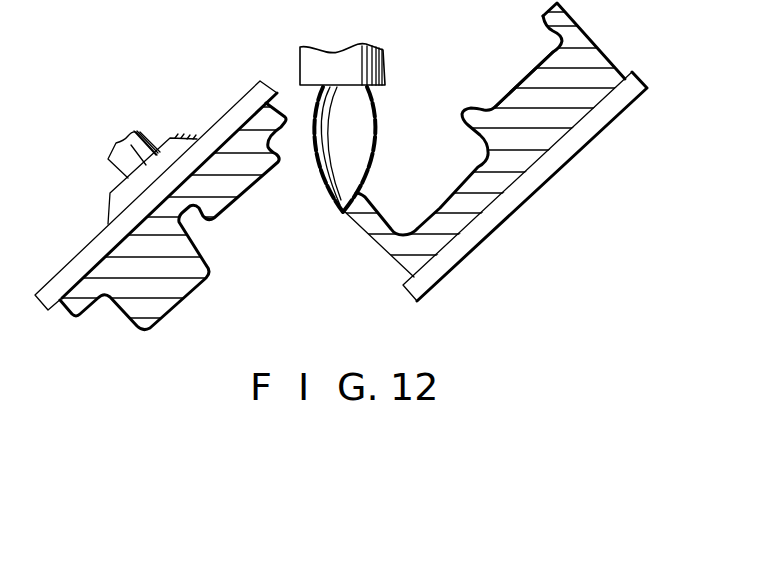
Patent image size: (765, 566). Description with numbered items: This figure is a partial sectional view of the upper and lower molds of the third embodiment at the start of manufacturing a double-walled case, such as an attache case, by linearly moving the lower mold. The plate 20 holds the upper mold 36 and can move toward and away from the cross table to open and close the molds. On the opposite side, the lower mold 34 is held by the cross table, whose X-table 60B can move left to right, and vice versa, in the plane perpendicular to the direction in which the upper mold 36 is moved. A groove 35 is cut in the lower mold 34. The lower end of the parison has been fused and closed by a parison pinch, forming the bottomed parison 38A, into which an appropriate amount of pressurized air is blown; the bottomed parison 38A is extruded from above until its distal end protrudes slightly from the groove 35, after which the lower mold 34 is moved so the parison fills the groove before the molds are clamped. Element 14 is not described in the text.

The plate 20 is at (259, 96).
The upper mold 36 is at (238, 183).
The mounting block 14 is at (386, 60).
The bottomed parison 38A is at (377, 138).
The lower mold 34 is at (590, 60).
The groove 35 is at (513, 88).
The X-table 60B is at (590, 133).